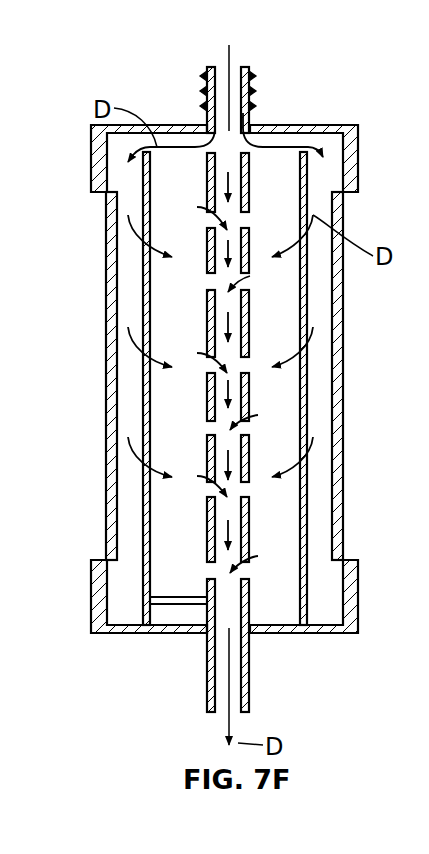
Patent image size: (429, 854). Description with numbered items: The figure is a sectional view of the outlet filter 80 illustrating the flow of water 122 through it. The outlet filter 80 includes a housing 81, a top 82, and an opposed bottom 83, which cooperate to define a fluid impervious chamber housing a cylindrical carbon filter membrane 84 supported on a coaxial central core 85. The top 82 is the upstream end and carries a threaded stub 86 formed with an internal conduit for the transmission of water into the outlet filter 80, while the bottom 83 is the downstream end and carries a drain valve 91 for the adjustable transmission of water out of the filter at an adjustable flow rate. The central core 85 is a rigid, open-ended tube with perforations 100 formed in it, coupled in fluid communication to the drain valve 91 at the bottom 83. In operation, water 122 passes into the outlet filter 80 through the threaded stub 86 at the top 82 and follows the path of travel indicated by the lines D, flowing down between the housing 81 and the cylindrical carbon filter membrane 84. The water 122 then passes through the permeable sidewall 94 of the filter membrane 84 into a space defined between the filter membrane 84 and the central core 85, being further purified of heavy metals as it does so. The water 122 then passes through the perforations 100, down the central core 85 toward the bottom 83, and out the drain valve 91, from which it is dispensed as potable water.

The outlet filter 80 is at (348, 303).
The housing 81 is at (345, 488).
The top 82 is at (205, 100).
The bottom 83 is at (253, 648).
The cylindrical carbon filter membrane 84 is at (305, 560).
The central core 85 is at (252, 458).
The threaded stub 86 is at (252, 93).
The drain valve 91 is at (206, 690).
The permeable filter sidewall 94 is at (298, 592).
The perforations 100 is at (207, 283).
The water 122 is at (232, 63).